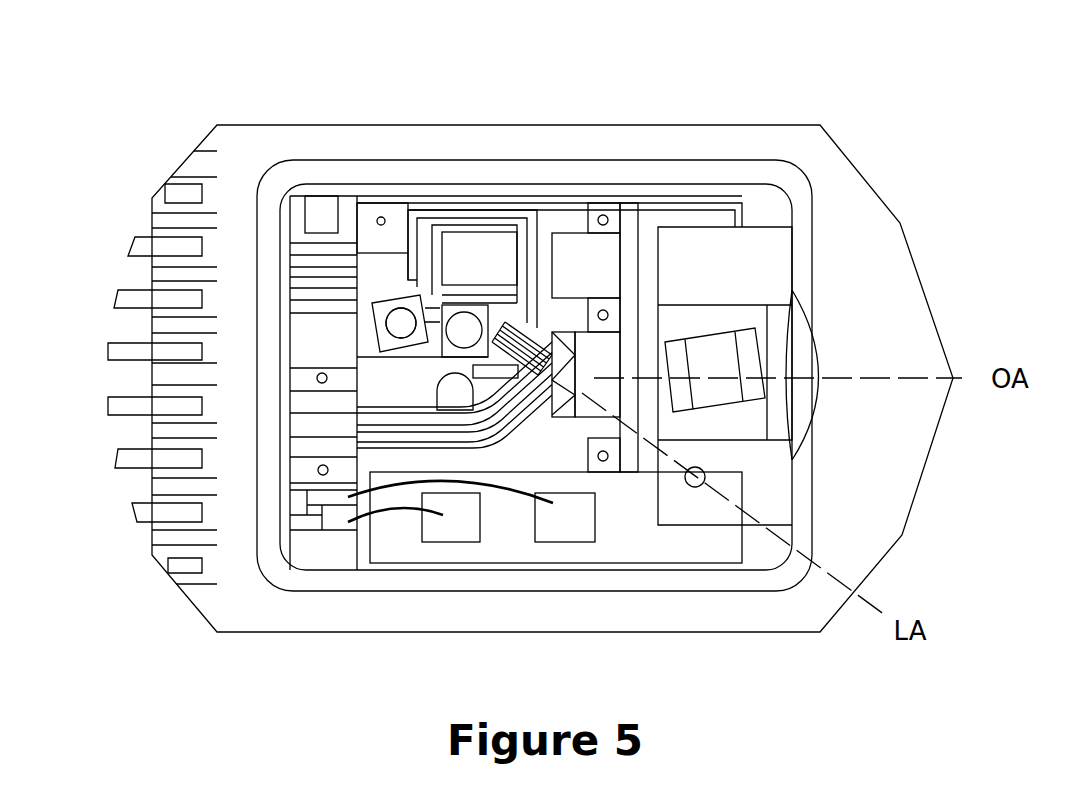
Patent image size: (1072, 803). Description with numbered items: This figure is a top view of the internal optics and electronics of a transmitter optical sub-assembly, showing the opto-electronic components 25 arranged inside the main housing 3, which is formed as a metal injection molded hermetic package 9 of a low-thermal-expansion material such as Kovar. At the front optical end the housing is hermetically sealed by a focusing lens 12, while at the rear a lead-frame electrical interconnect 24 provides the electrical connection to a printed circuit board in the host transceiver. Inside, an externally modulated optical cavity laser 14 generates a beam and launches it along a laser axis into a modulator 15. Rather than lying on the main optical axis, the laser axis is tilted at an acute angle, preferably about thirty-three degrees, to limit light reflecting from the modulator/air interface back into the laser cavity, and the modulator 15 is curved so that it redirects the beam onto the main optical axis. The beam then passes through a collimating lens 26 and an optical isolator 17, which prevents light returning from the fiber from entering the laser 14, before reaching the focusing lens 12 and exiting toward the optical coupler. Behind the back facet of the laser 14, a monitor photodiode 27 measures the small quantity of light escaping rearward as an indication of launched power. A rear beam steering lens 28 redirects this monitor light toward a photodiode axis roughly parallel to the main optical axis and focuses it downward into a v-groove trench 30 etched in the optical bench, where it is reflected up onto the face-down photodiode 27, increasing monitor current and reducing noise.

The main housing 3 is at (200, 622).
The hermetic package 9 is at (893, 512).
The focusing lens 12 is at (802, 348).
The laser 14 is at (533, 323).
The modulator 15 is at (540, 345).
The optical isolator 17 is at (740, 332).
The lead-frame electrical interconnect 24 is at (200, 162).
The opto-electronic components 25 is at (772, 90).
The collimating lens 26 is at (603, 390).
The photodiode 27 is at (398, 318).
The rear beam steering lens 28 is at (465, 330).
The v-groove trench 30 is at (433, 315).